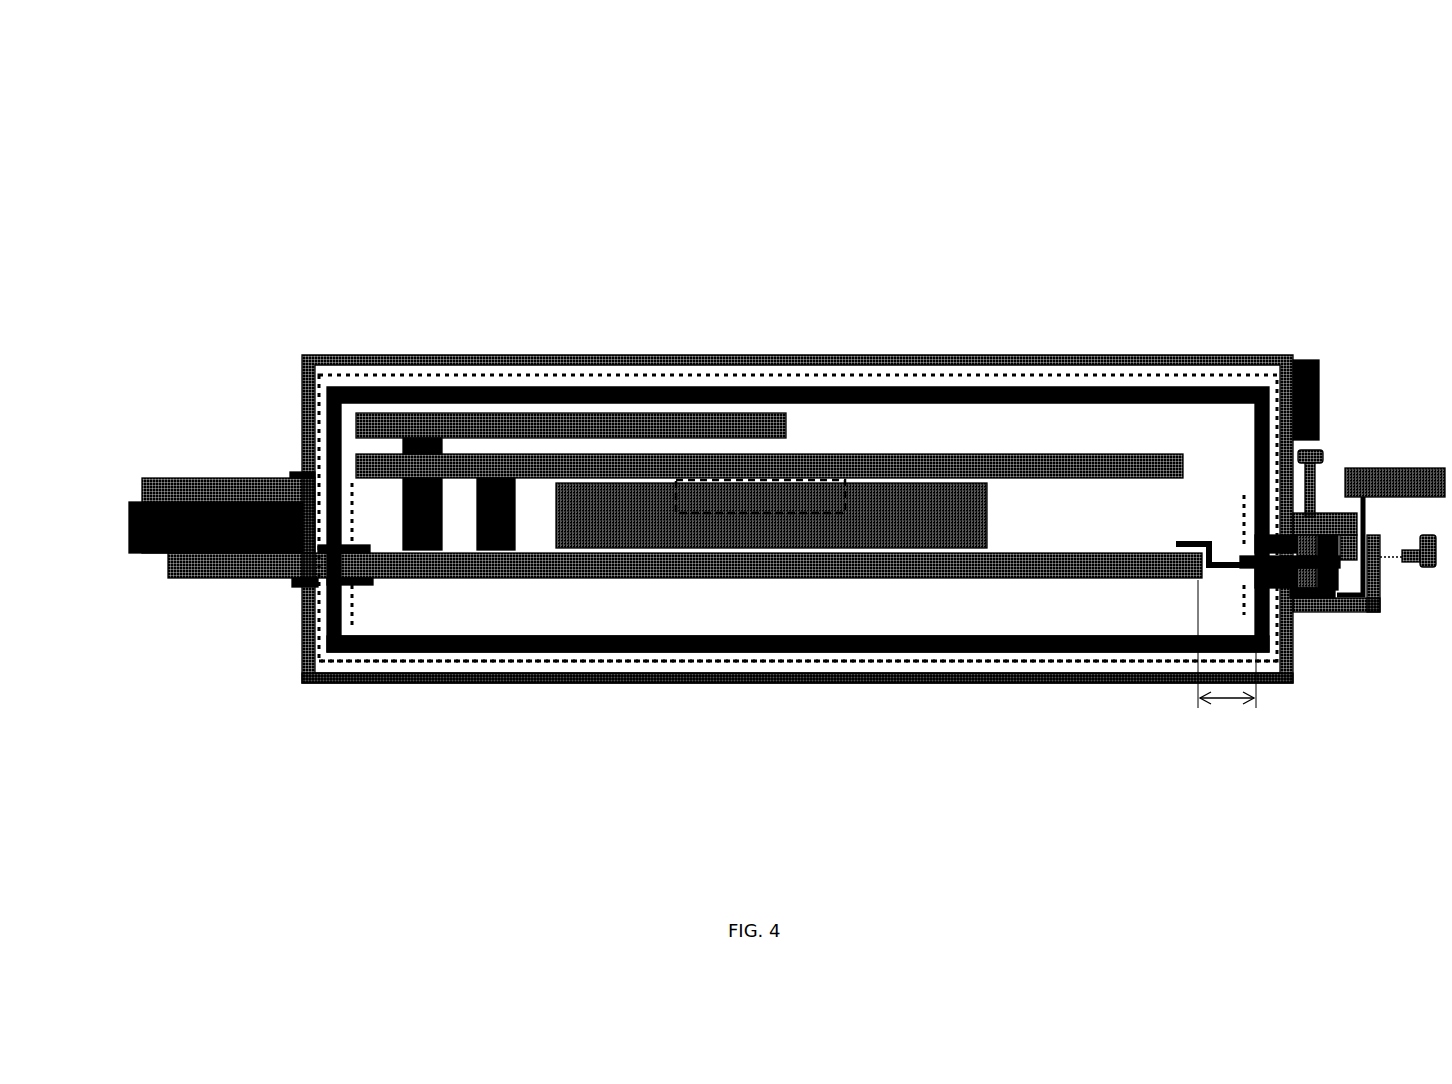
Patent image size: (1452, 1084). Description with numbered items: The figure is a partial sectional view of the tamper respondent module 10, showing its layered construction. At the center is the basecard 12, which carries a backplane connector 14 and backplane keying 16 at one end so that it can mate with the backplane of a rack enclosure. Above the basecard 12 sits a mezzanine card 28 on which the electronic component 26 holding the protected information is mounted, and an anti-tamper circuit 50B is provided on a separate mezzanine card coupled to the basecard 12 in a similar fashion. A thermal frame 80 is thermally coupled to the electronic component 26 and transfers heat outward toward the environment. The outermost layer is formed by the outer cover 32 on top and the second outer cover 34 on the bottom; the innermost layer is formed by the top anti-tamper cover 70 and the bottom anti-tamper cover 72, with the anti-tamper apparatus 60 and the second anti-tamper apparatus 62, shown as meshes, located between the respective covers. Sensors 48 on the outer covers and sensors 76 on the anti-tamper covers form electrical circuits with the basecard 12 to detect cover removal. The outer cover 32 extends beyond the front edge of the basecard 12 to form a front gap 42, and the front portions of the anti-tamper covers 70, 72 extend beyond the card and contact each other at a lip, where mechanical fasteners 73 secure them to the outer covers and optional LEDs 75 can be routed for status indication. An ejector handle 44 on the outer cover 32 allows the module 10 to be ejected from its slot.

The tamper respondent module 10 is at (294, 232).
The basecard 12 is at (737, 580).
The backplane connector 14 is at (178, 474).
The backplane keying 16 is at (142, 556).
The electronic component 26 is at (792, 483).
The mezzanine card 28 is at (626, 465).
The outer cover 32 is at (966, 352).
The second outer cover 34 is at (612, 675).
The front gap 42 is at (1231, 726).
The ejector handle 44 is at (1306, 360).
The sensor 48 is at (293, 470).
The anti-tamper circuit 50B is at (460, 430).
The anti-tamper apparatus 60 is at (1022, 373).
The second anti-tamper apparatus 62 is at (563, 663).
The top anti-tamper cover 70 is at (1090, 388).
The bottom anti-tamper cover 72 is at (476, 653).
The mechanical fastener 73 is at (1331, 448).
The LED 75 is at (1418, 468).
The sensor 76 is at (317, 525).
The thermal frame 80 is at (866, 493).